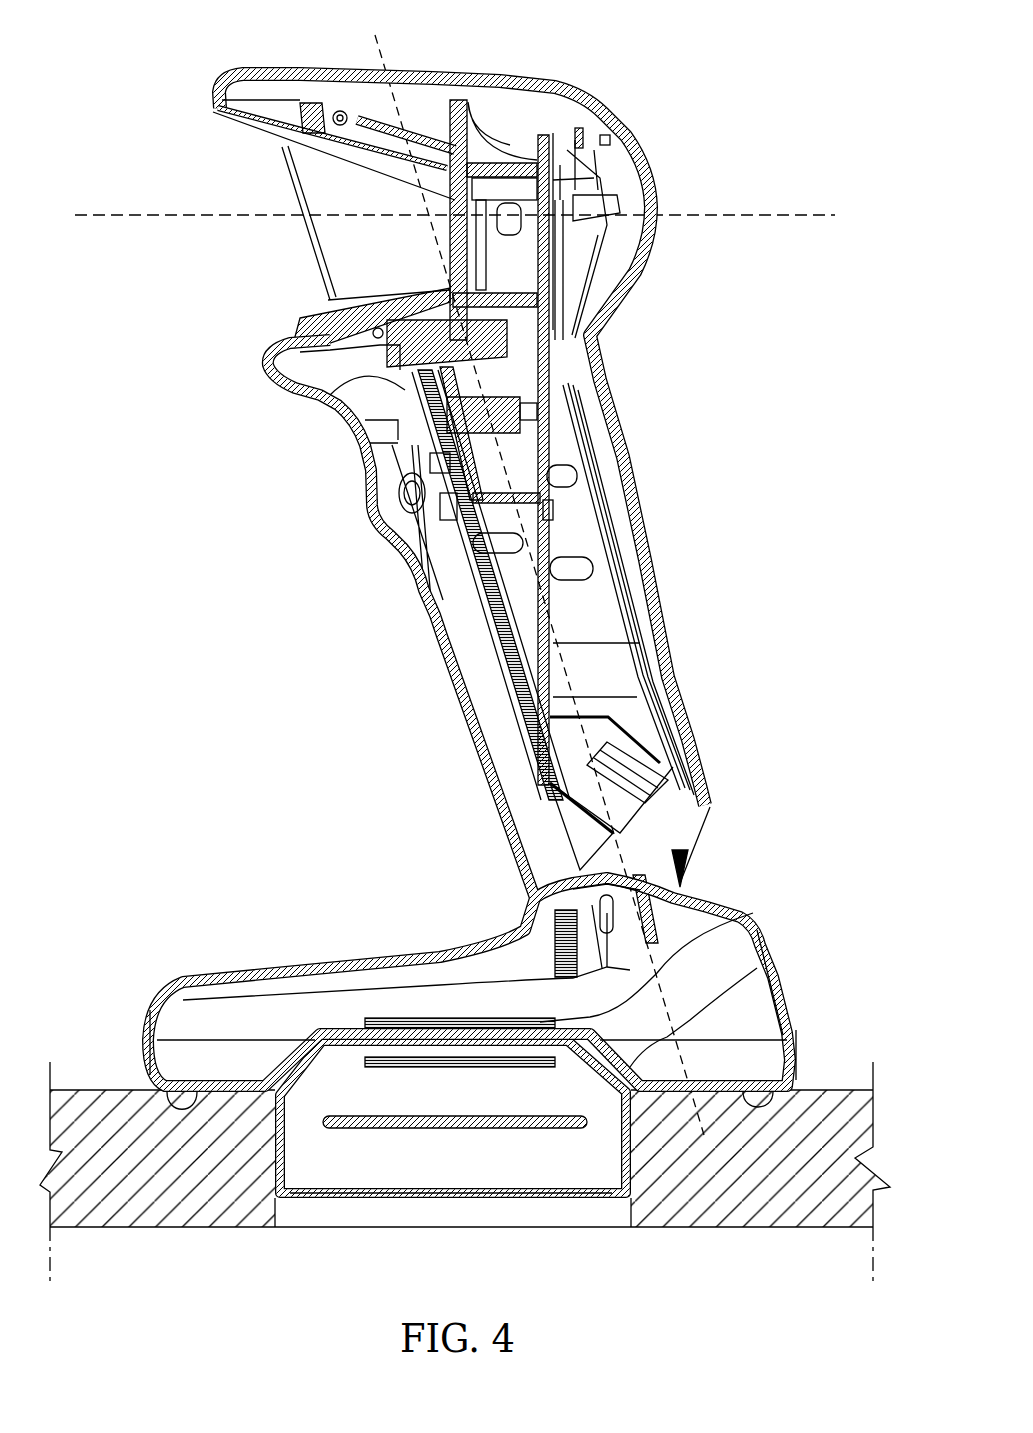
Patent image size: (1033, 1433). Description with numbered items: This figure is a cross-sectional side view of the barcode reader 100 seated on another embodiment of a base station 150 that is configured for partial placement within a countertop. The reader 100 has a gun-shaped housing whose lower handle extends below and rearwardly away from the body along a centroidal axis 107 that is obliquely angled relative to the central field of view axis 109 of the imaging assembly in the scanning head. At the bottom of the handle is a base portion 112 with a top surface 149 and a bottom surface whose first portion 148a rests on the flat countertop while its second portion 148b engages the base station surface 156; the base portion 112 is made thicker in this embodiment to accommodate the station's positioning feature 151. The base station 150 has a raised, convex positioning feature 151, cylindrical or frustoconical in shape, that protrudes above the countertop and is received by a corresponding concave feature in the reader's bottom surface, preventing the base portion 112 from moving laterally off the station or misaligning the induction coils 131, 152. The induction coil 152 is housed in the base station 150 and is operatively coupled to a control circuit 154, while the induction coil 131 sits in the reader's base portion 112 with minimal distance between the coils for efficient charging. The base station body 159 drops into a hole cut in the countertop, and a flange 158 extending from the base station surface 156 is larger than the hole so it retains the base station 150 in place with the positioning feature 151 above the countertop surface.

The barcode reader 100 is at (468, 571).
The centroidal axis 107 is at (389, 55).
The central field of view axis 109 is at (159, 218).
The base portion 112 is at (703, 893).
The induction coil 131 is at (680, 917).
The first portion of the bottom surface 148a is at (793, 1072).
The second portion of the bottom surface 148b is at (453, 1058).
The top surface 149 is at (339, 966).
The base station 150 is at (482, 1148).
The positioning feature 151 is at (624, 1120).
The induction coil 152 is at (762, 964).
The control circuit 154 is at (465, 1132).
The base station surface 156 is at (387, 1022).
The flange 158 is at (265, 1097).
The base station body 159 is at (565, 1165).